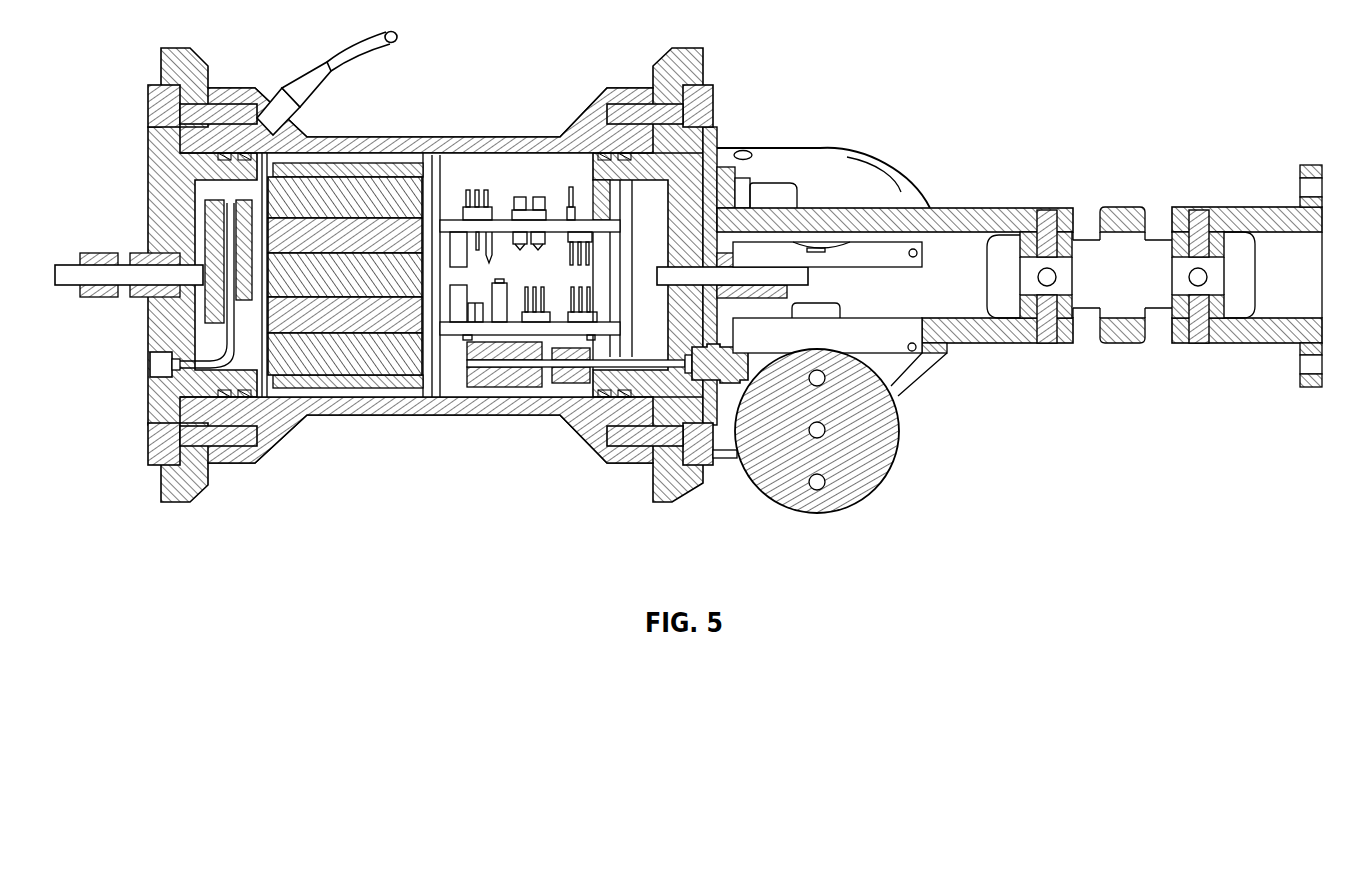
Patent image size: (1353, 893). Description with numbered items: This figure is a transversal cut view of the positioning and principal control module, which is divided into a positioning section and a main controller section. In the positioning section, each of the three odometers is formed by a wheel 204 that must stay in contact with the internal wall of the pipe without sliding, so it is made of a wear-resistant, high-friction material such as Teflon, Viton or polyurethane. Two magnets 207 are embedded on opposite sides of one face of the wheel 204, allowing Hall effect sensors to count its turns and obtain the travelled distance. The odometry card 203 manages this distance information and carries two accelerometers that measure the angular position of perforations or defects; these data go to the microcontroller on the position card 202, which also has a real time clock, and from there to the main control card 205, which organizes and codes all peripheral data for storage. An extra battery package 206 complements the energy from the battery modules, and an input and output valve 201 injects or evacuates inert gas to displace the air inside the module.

The input and output valve 201 is at (150, 354).
The position card 202 is at (533, 200).
The odometry card 203 is at (595, 236).
The wheel 204 is at (900, 443).
The main control card 205 is at (512, 317).
The extra battery package 206 is at (333, 380).
The embedded magnet 207 is at (818, 482).